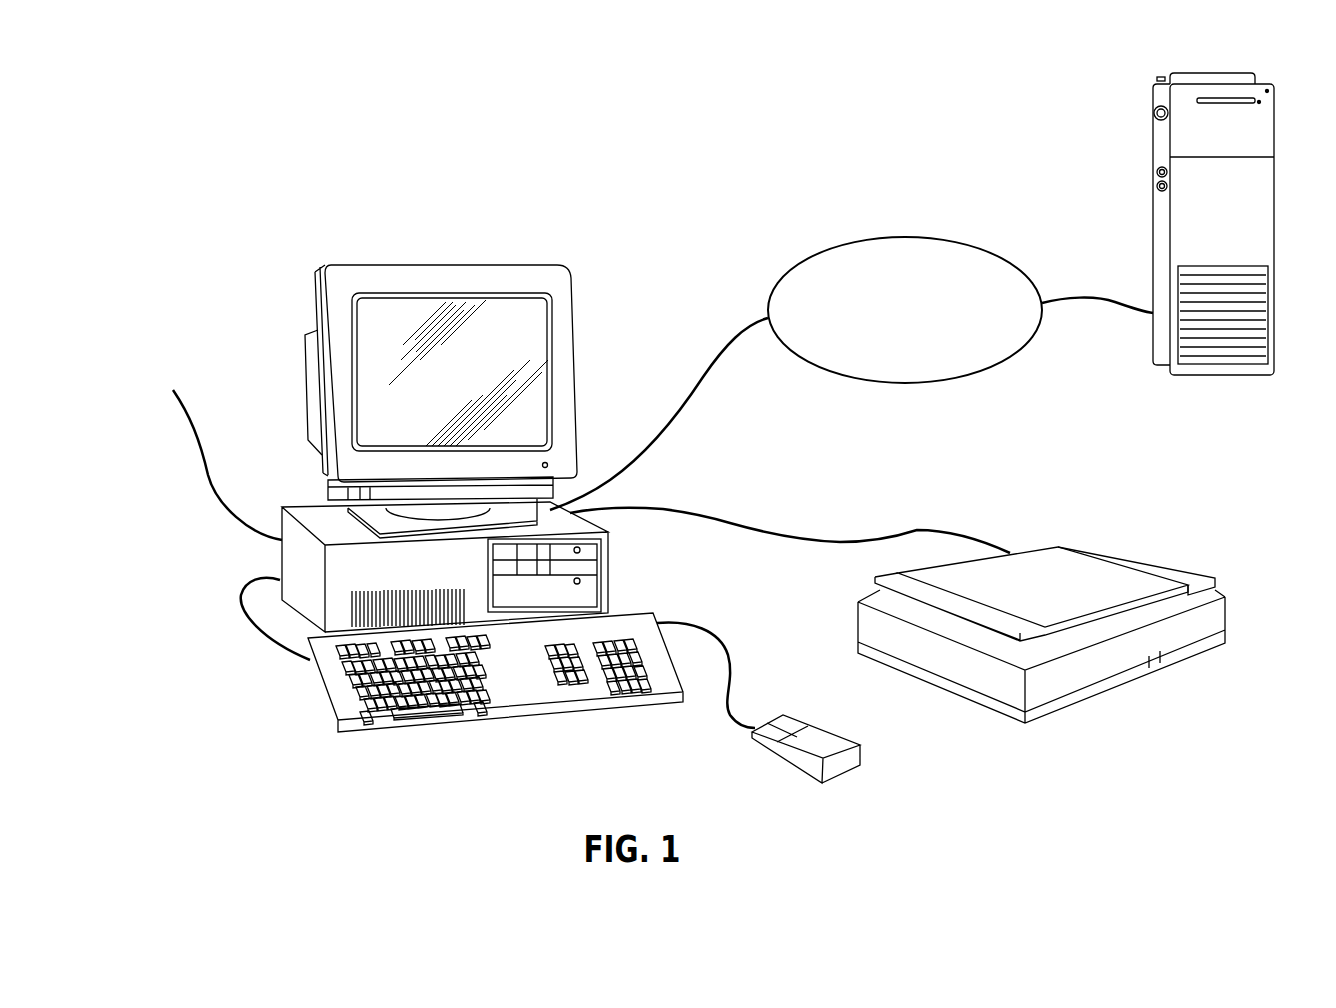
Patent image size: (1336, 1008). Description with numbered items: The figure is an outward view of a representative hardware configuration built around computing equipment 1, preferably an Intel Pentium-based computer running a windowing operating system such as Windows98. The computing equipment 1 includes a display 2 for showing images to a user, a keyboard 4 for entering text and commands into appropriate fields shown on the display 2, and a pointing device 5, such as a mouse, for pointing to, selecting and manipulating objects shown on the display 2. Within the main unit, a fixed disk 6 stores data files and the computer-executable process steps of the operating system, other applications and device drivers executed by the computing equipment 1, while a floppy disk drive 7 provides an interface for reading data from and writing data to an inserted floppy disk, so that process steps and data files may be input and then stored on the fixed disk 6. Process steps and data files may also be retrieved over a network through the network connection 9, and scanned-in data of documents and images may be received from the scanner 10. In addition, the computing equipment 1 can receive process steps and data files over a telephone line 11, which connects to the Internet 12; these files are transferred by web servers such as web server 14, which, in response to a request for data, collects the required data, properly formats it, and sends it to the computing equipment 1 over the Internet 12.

The computing equipment 1 is at (583, 228).
The display 2 is at (417, 262).
The keyboard 4 is at (530, 705).
The pointing device 5 is at (845, 767).
The fixed disk 6 is at (595, 598).
The floppy disk drive 7 is at (592, 568).
The network connection 9 is at (198, 427).
The scanner 10 is at (1077, 693).
The telephone line 11 is at (697, 388).
The Internet 12 is at (918, 236).
The web server 14 is at (1280, 200).